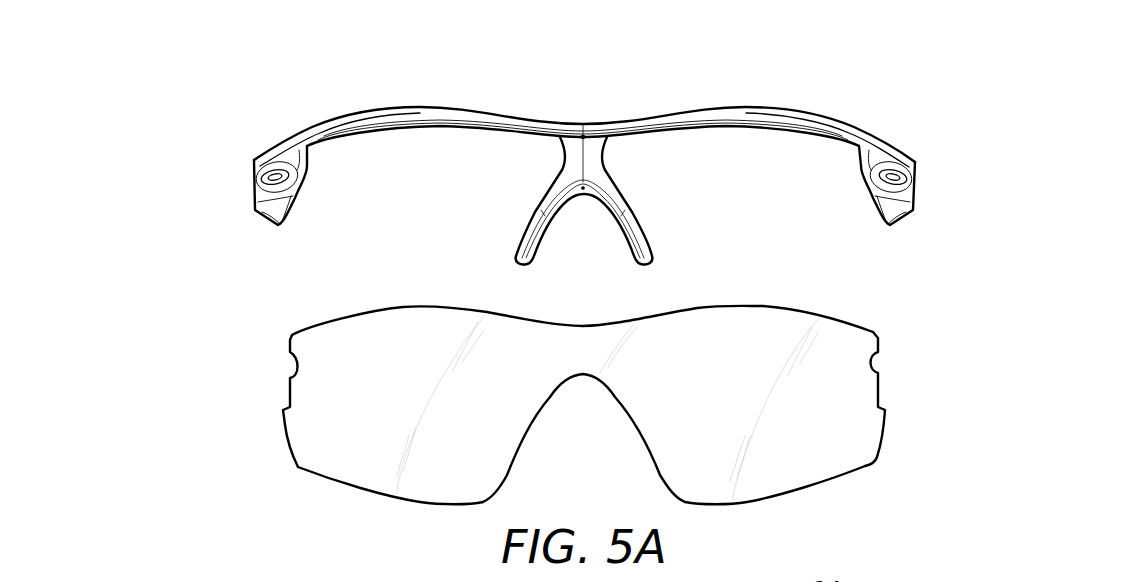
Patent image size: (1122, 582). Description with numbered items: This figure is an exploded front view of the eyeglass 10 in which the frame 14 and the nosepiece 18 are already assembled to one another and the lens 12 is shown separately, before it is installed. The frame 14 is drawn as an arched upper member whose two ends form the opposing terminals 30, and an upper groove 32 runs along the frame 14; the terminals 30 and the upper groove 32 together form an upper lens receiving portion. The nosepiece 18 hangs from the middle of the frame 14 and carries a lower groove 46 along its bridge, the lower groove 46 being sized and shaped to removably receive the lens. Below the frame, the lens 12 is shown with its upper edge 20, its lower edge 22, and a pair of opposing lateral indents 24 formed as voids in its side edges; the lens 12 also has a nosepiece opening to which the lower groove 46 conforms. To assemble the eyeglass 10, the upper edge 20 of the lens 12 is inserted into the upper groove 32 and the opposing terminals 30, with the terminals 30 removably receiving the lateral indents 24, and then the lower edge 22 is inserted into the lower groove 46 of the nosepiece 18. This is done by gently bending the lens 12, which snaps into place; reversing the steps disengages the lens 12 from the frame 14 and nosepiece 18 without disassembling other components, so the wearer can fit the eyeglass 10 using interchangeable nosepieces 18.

The eyeglass 10 is at (1004, 96).
The lens 12 is at (868, 442).
The frame 14 is at (804, 117).
The nosepiece 18 is at (598, 162).
The upper edge 20 is at (764, 304).
The lower edge 22 is at (528, 448).
The lateral indents 24 is at (290, 383).
The opposing terminals 30 is at (300, 208).
The upper groove 32 is at (424, 130).
The lower groove 46 is at (532, 225).